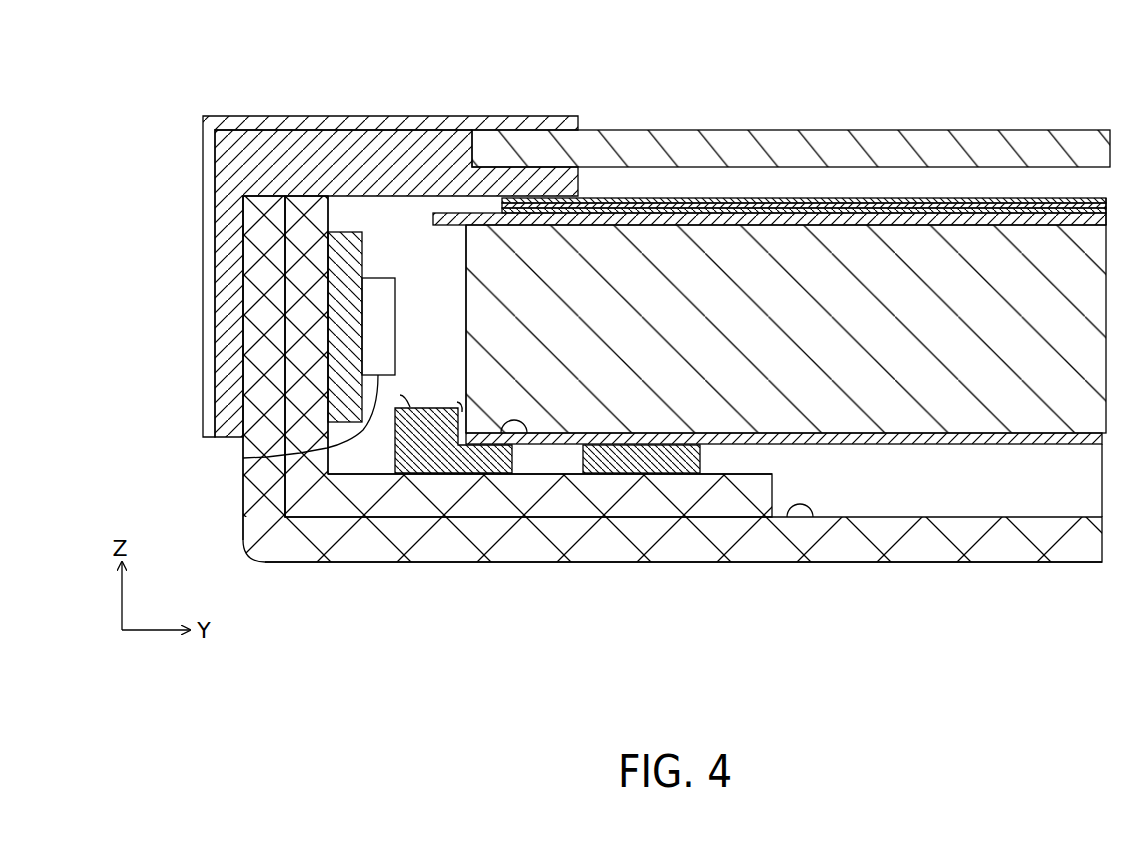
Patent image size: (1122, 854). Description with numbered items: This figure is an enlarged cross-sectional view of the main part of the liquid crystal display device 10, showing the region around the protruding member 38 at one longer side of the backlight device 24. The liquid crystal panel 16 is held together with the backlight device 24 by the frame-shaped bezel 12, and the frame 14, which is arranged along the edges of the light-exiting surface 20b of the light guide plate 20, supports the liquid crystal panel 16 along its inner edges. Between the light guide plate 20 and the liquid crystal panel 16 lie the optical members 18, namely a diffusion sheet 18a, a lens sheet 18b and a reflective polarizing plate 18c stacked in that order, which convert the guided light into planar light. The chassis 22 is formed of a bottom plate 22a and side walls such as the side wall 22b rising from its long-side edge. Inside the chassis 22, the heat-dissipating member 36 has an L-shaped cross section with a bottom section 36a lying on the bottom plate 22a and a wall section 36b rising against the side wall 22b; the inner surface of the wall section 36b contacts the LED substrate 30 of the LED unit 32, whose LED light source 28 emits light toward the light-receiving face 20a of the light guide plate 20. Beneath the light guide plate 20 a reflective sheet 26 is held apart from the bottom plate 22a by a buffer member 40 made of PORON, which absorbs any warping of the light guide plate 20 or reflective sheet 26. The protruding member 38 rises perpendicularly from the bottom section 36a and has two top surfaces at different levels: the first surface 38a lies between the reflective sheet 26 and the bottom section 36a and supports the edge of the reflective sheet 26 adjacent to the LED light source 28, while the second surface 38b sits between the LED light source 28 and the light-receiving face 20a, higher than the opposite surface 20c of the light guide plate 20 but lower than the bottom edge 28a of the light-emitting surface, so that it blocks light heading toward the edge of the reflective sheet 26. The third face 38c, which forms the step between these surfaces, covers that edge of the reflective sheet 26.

The liquid crystal display device 10 is at (713, 80).
The bezel 12 is at (236, 126).
The frame 14 is at (288, 152).
The liquid crystal panel 16 is at (627, 150).
The optical members 18 is at (804, 130).
The diffusion sheet 18a is at (848, 200).
The lens sheet 18b is at (901, 205).
The reflective polarizing plate 18c is at (858, 86).
The light guide plate 20 is at (759, 339).
The light-receiving face 20a is at (460, 258).
The light-exiting surface 20b is at (776, 213).
The opposite surface 20c is at (1010, 444).
The chassis 22 is at (622, 426).
The bottom plate 22a is at (790, 530).
The side wall 22b is at (267, 337).
The backlight device 24 is at (722, 582).
The reflective sheet 26 is at (907, 444).
The LED light source 28 is at (377, 300).
The bottom edge of light-emitting surface 28a is at (243, 458).
The LED substrate 30 is at (345, 330).
The LED unit 32 is at (250, 355).
The heat-dissipating member 36 is at (455, 406).
The bottom section 36a is at (593, 497).
The wall section 36b is at (307, 355).
The protruding member 38 is at (438, 504).
The first surface 38a is at (528, 436).
The second surface 38b is at (400, 395).
The third face 38c is at (457, 402).
The buffer member 40 is at (635, 462).